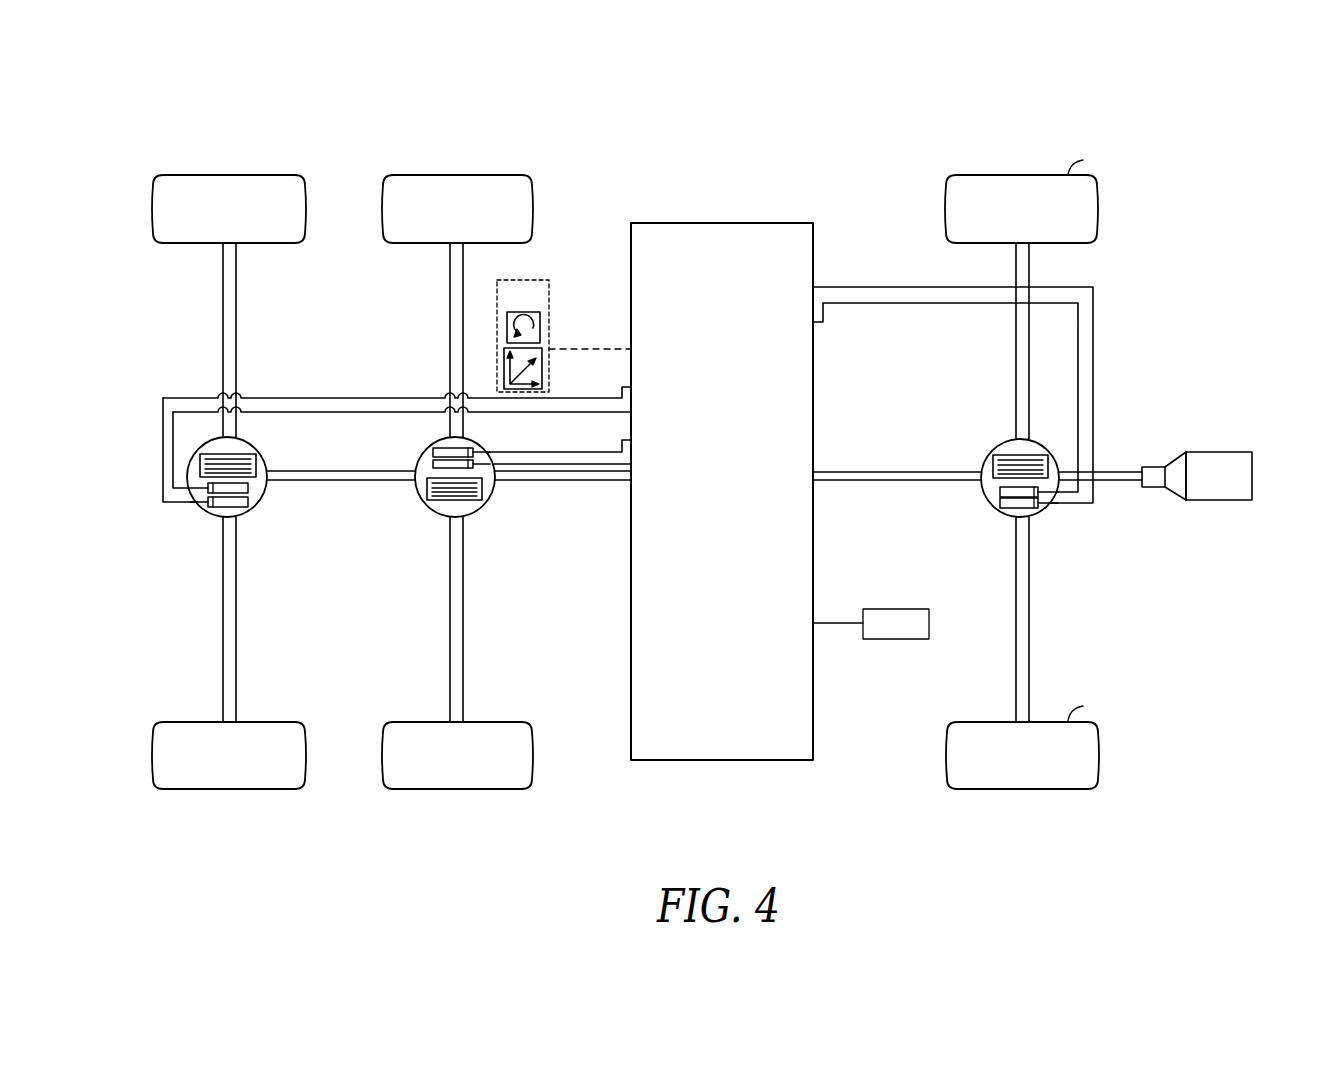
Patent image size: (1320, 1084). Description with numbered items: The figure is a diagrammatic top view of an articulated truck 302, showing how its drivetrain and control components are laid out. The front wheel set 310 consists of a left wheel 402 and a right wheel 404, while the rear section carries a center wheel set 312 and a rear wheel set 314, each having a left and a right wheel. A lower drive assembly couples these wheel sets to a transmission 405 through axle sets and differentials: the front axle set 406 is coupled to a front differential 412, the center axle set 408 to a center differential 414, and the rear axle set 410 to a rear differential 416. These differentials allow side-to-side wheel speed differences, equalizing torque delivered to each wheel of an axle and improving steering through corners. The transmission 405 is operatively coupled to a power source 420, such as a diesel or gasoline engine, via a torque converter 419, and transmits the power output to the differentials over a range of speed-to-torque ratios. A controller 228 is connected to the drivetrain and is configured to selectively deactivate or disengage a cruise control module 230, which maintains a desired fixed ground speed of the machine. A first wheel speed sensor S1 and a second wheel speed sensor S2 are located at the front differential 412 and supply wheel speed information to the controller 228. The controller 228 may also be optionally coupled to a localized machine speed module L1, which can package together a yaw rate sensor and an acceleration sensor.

The articulated truck 302 is at (1162, 125).
The controller 228 is at (738, 487).
The cruise control module 230 is at (912, 636).
The localized machine speed module L1 is at (533, 309).
The rear wheel set 314 is at (245, 219).
The center wheel set 312 is at (473, 219).
The left wheel 402 is at (1038, 217).
The right wheel 404 is at (1038, 766).
The front wheel set 310 is at (1092, 432).
The rear axle set 410 is at (237, 300).
The center axle set 408 is at (449, 300).
The front axle set 406 is at (1030, 269).
The rear differential 416 is at (253, 447).
The center differential 414 is at (428, 447).
The front differential 412 is at (995, 447).
The first wheel speed sensor S1 is at (1057, 470).
The second wheel speed sensor S2 is at (1050, 505).
The transmission 405 is at (1153, 488).
The torque converter 419 is at (1176, 497).
The power source 420 is at (1235, 488).